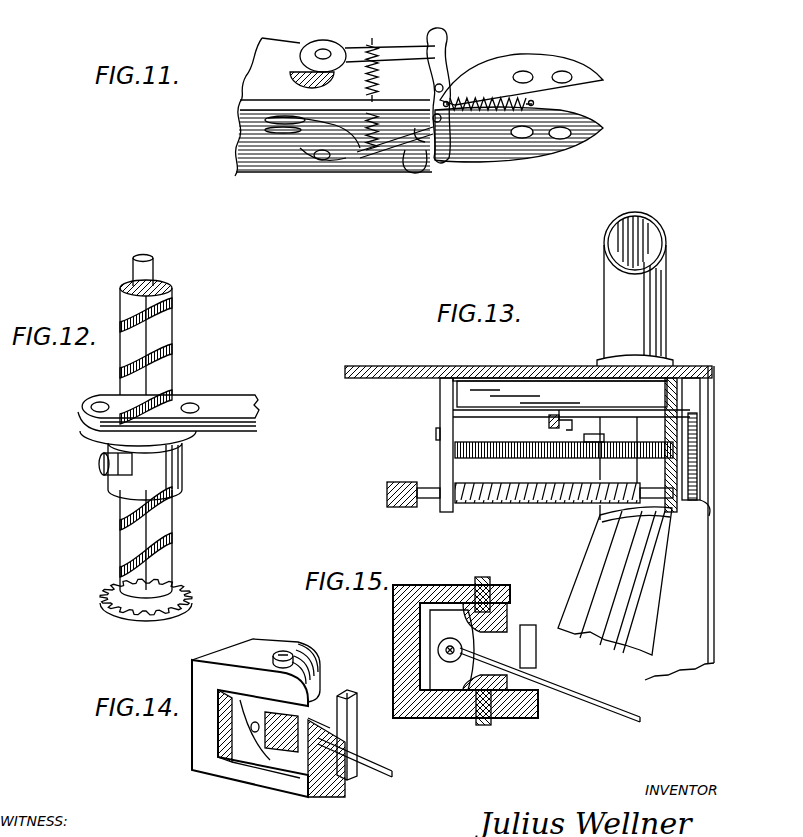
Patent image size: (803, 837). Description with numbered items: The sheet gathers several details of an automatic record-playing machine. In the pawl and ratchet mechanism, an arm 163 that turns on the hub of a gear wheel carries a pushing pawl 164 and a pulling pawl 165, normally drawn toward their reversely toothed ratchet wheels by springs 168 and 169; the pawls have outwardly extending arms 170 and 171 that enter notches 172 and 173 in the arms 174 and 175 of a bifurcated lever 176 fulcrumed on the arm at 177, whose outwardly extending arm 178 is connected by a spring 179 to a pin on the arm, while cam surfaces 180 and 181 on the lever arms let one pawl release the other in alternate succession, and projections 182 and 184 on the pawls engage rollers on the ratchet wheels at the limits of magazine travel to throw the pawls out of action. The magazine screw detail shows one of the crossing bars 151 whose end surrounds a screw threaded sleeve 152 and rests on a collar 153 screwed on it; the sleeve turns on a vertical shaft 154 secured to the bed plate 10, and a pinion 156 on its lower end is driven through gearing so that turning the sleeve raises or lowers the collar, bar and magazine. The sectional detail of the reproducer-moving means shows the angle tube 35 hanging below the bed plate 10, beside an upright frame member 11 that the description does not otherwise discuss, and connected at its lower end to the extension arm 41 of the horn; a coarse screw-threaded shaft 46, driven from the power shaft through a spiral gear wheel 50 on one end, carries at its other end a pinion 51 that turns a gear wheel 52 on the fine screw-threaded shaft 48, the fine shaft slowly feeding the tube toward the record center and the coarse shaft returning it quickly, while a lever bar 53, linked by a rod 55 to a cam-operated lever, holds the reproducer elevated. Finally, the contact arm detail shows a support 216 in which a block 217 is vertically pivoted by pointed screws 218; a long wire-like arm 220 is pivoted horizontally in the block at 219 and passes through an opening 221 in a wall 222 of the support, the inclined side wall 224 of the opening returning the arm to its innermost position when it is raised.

In FIG. 13, the bed plate 10 is at (445, 359).
In FIG. 13, the frame 11 is at (709, 602).
In FIG. 13, the angle tube 35 is at (656, 302).
In FIG. 13, the extension arm 41 is at (592, 557).
In FIG. 13, the coarse screw-threaded shaft 46 is at (496, 503).
In FIG. 13, the fine screw-threaded shaft 48 is at (520, 438).
In FIG. 13, the spiral gear wheel 50 is at (400, 481).
In FIG. 13, the pinion 51 is at (704, 500).
In FIG. 13, the gear wheel 52 is at (698, 424).
In FIG. 13, the lever bar 53 is at (500, 393).
In FIG. 13, the rod 55 is at (560, 410).
In FIG. 12, the bar 151 is at (215, 392).
In FIG. 12, the screw threaded sleeve 152 is at (170, 338).
In FIG. 12, the collar 153 is at (183, 464).
In FIG. 12, the vertical shaft 154 is at (157, 270).
In FIG. 12, the pinion 156 is at (104, 589).
In FIG. 11, the arm 163 is at (575, 125).
In FIG. 11, the pushing pawl 164 is at (318, 162).
In FIG. 11, the pulling pawl 165 is at (300, 50).
In FIG. 11, the spring 168 is at (356, 155).
In FIG. 11, the spring 169 is at (366, 48).
In FIG. 11, the arm 170 is at (386, 160).
In FIG. 11, the arm 171 is at (378, 58).
In FIG. 11, the notch 172 is at (418, 150).
In FIG. 11, the notch 173 is at (430, 38).
In FIG. 11, the arm 174 is at (446, 128).
In FIG. 11, the arm 175 is at (446, 58).
In FIG. 11, the bifurcated lever 176 is at (447, 118).
In FIG. 11, the lever fulcrum 177 is at (448, 90).
In FIG. 11, the arm 178 is at (456, 106).
In FIG. 11, the spring 179 is at (502, 95).
In FIG. 11, the cam surface 180 is at (430, 176).
In FIG. 11, the cam surface 181 is at (446, 104).
In FIG. 11, the projection 182 is at (250, 146).
In FIG. 11, the projection 184 is at (292, 76).
In FIG. 14, the support 216 is at (192, 670).
In FIG. 15, the support 216 is at (393, 637).
In FIG. 14, the block 217 is at (256, 755).
In FIG. 15, the block 217 is at (448, 692).
In FIG. 14, the pointed screw 218 is at (292, 652).
In FIG. 15, the pointed screw 218 is at (478, 578).
In FIG. 14, the pivot 219 is at (250, 730).
In FIG. 15, the pivot 219 is at (463, 649).
In FIG. 14, the wire-like arm 220 is at (396, 774).
In FIG. 15, the wire-like arm 220 is at (576, 696).
In FIG. 14, the opening 221 is at (352, 708).
In FIG. 15, the opening 221 is at (536, 656).
In FIG. 14, the wall 222 is at (332, 772).
In FIG. 14, the inclined side wall 224 is at (312, 720).